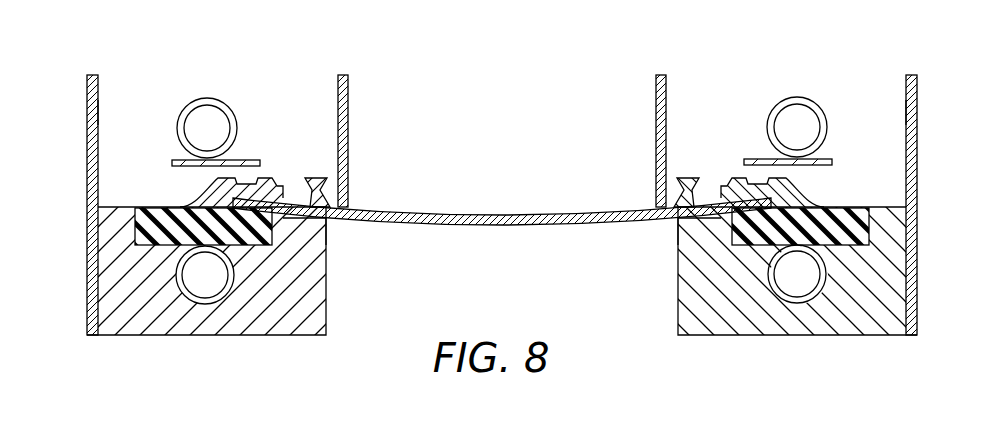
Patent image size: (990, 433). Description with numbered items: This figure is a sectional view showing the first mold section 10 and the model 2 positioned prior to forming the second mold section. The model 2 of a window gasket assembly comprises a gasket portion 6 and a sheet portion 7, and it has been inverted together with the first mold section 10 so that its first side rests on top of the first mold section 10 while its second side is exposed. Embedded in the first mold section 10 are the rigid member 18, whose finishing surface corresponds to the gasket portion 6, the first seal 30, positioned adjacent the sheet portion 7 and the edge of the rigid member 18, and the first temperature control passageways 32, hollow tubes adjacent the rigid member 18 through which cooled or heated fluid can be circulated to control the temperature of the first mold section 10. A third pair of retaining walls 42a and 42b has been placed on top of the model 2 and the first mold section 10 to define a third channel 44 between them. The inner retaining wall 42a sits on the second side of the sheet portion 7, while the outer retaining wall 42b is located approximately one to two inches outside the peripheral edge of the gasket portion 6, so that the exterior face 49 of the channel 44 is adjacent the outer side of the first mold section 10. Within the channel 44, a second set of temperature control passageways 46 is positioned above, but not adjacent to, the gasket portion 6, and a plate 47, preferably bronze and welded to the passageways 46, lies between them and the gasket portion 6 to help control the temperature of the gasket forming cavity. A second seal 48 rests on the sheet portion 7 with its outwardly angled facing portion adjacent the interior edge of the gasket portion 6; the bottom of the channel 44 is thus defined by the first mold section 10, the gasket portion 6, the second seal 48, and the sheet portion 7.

The model 2 is at (506, 236).
The gasket portion 6 is at (186, 206).
The sheet portion 7 is at (481, 212).
The first mold section 10 is at (127, 338).
The rigid member 18 is at (140, 214).
The first seal 30 is at (292, 240).
The first temperature control passageways 32 is at (205, 305).
The inner retaining wall 42a is at (349, 102).
The outer retaining wall 42b is at (88, 106).
The third channel 44 is at (144, 139).
The second temperature control passageways 46 is at (207, 97).
The plate 47 is at (251, 160).
The second seal 48 is at (315, 178).
The exterior face 49 is at (99, 112).